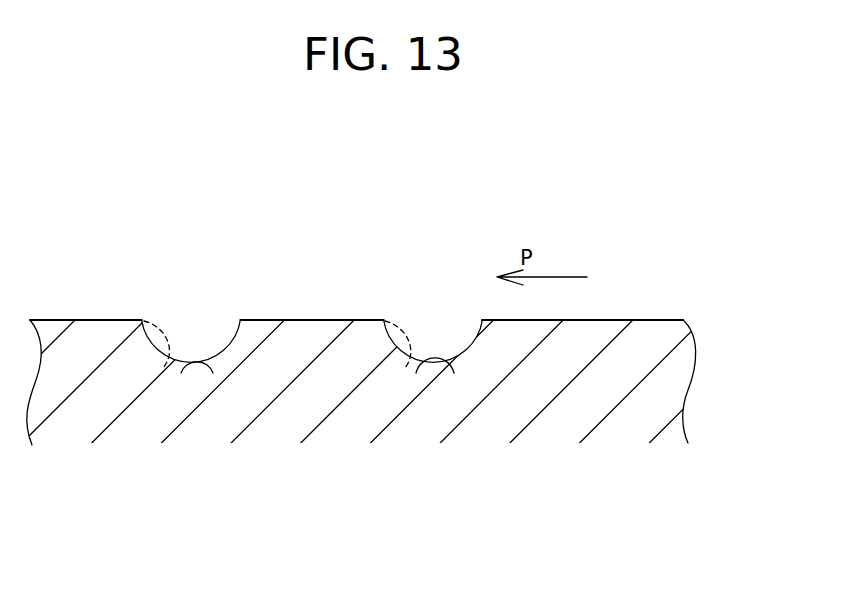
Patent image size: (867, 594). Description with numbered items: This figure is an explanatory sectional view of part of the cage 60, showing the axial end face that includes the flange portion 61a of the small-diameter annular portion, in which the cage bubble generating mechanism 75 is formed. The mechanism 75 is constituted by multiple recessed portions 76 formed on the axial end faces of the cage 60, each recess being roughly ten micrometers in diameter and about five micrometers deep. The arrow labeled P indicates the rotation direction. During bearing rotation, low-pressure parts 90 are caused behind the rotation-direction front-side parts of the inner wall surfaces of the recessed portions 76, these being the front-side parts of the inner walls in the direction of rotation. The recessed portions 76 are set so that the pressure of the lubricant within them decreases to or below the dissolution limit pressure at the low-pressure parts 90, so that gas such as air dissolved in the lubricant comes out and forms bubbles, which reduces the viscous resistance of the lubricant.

The cage 60 is at (661, 306).
The flange portion 61a is at (587, 335).
The cage bubble generating mechanism 75 is at (363, 511).
The recessed portion 76 is at (182, 366).
The low-pressure part 90 is at (407, 334).